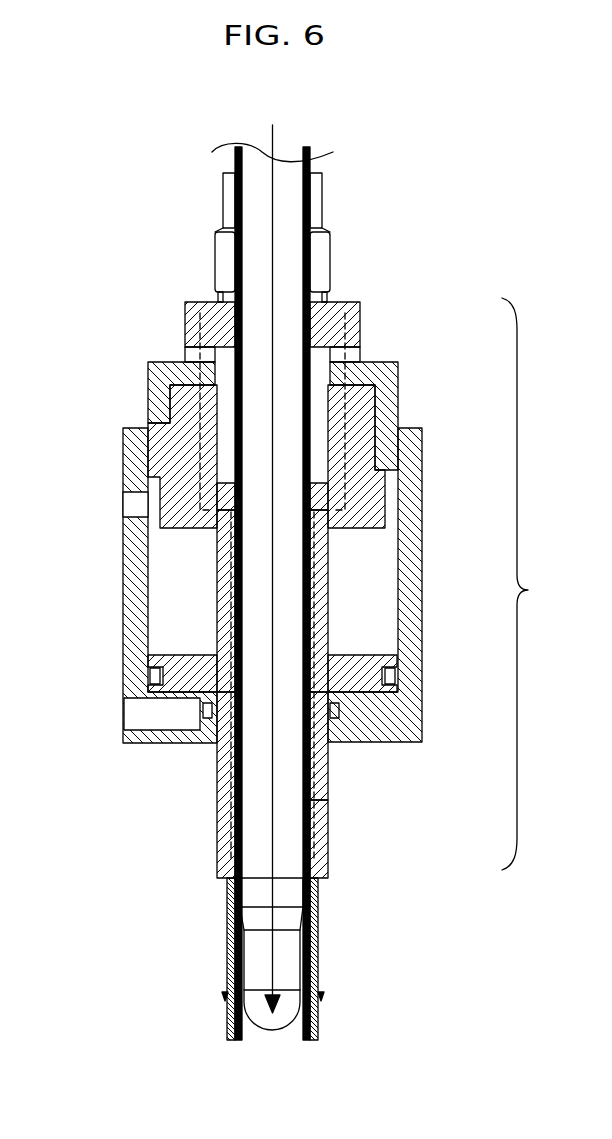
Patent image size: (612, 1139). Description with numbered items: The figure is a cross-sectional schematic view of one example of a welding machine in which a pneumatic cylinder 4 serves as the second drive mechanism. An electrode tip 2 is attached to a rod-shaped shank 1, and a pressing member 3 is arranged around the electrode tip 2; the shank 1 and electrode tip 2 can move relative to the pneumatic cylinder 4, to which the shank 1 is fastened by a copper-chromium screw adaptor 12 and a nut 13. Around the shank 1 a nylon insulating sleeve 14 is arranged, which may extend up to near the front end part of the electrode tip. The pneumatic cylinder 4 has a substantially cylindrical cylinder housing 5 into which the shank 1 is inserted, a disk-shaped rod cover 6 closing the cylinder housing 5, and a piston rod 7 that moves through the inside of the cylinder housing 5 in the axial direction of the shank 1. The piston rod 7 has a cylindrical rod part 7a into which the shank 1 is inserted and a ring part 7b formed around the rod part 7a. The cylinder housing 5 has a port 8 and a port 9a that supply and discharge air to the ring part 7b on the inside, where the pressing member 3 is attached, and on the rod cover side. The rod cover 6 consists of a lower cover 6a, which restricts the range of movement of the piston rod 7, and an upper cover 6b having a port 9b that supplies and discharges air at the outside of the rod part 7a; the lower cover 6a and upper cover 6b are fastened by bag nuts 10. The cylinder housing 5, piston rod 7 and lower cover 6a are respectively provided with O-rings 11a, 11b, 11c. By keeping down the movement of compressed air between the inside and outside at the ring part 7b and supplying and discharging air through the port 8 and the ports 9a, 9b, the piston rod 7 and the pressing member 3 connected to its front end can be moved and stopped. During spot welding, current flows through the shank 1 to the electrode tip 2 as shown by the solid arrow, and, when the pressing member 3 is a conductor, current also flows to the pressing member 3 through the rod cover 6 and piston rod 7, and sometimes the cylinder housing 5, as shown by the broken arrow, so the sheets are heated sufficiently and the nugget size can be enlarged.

The shank 1 is at (288, 167).
The electrode tip 2 is at (278, 1032).
The pressing member 3 is at (225, 965).
The pneumatic cylinder 4 is at (528, 584).
The cylinder housing 5 is at (413, 558).
The rod cover 6 is at (256, 405).
The lower cover 6a is at (165, 448).
The upper cover 6b is at (188, 310).
The piston rod 7 is at (320, 770).
The rod part 7a is at (220, 603).
The ring part 7b is at (187, 657).
The port 8 is at (143, 722).
The port 9a is at (133, 508).
The port 9b is at (190, 355).
The bag nut 10 is at (152, 387).
The O-ring 11a is at (208, 718).
The O-ring 11b is at (150, 675).
The O-ring 11c is at (208, 505).
The screw adaptor 12 is at (227, 197).
The nut 13 is at (225, 262).
The insulating sleeve 14 is at (320, 812).